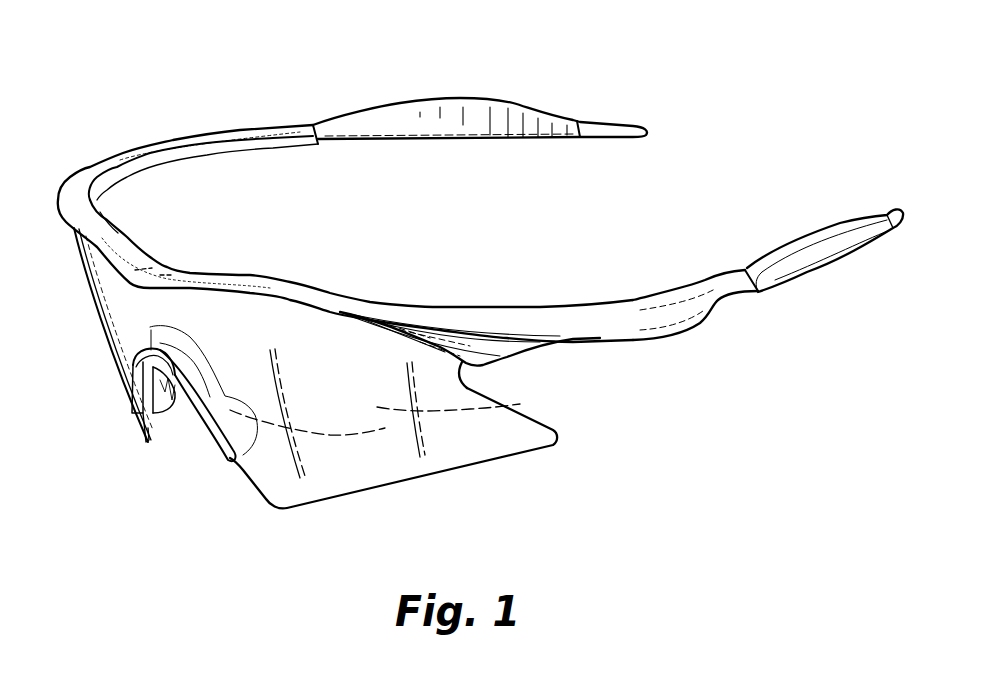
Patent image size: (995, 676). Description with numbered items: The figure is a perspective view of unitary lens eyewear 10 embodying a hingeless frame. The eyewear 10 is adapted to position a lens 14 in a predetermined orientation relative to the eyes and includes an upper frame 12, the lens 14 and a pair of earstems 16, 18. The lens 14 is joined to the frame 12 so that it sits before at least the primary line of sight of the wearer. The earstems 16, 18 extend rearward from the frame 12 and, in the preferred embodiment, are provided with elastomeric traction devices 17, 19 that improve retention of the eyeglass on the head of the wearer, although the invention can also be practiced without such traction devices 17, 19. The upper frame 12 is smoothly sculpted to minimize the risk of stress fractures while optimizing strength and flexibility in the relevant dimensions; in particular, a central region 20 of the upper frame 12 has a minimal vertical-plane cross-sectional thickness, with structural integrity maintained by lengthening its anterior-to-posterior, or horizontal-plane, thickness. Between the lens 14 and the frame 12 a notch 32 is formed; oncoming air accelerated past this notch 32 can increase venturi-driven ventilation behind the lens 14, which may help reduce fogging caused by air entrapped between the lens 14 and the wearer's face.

The eyewear 10 is at (151, 453).
The frame 12 is at (388, 304).
The lens 14 is at (367, 470).
The earstem 16 is at (303, 120).
The elastomeric traction device 17 is at (828, 228).
The earstem 18 is at (717, 334).
The elastomeric traction device 19 is at (455, 97).
The central region 20 is at (157, 262).
The notch 32 is at (521, 383).